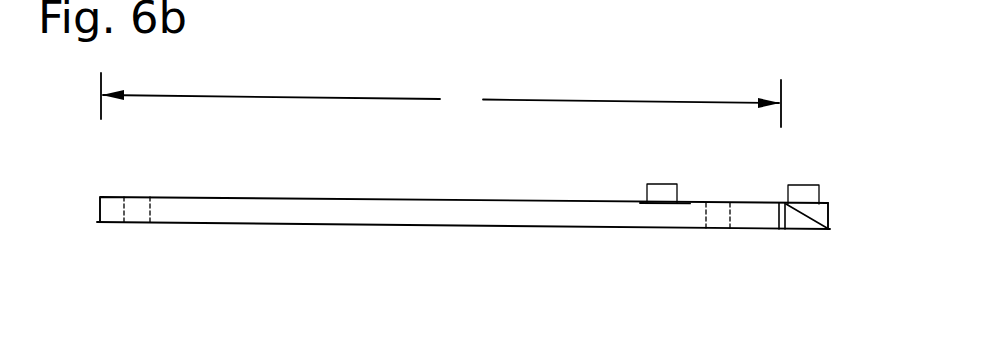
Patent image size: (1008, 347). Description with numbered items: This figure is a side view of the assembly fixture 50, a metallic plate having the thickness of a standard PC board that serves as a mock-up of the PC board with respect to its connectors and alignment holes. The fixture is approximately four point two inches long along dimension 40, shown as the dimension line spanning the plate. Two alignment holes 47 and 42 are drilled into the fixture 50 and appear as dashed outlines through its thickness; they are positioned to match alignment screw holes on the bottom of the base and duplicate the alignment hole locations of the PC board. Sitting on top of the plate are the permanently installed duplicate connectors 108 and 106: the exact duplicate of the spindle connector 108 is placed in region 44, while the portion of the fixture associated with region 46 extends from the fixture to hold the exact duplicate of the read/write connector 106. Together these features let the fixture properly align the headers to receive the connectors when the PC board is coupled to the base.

The dimension 40 is at (441, 100).
The assembly fixture 50 is at (463, 185).
The alignment hole 47 is at (92, 245).
The spindle connector 108 is at (618, 167).
The read/write connector 106 is at (846, 170).
The region 44 is at (629, 251).
The alignment hole 42 is at (765, 253).
The region 46 is at (845, 242).